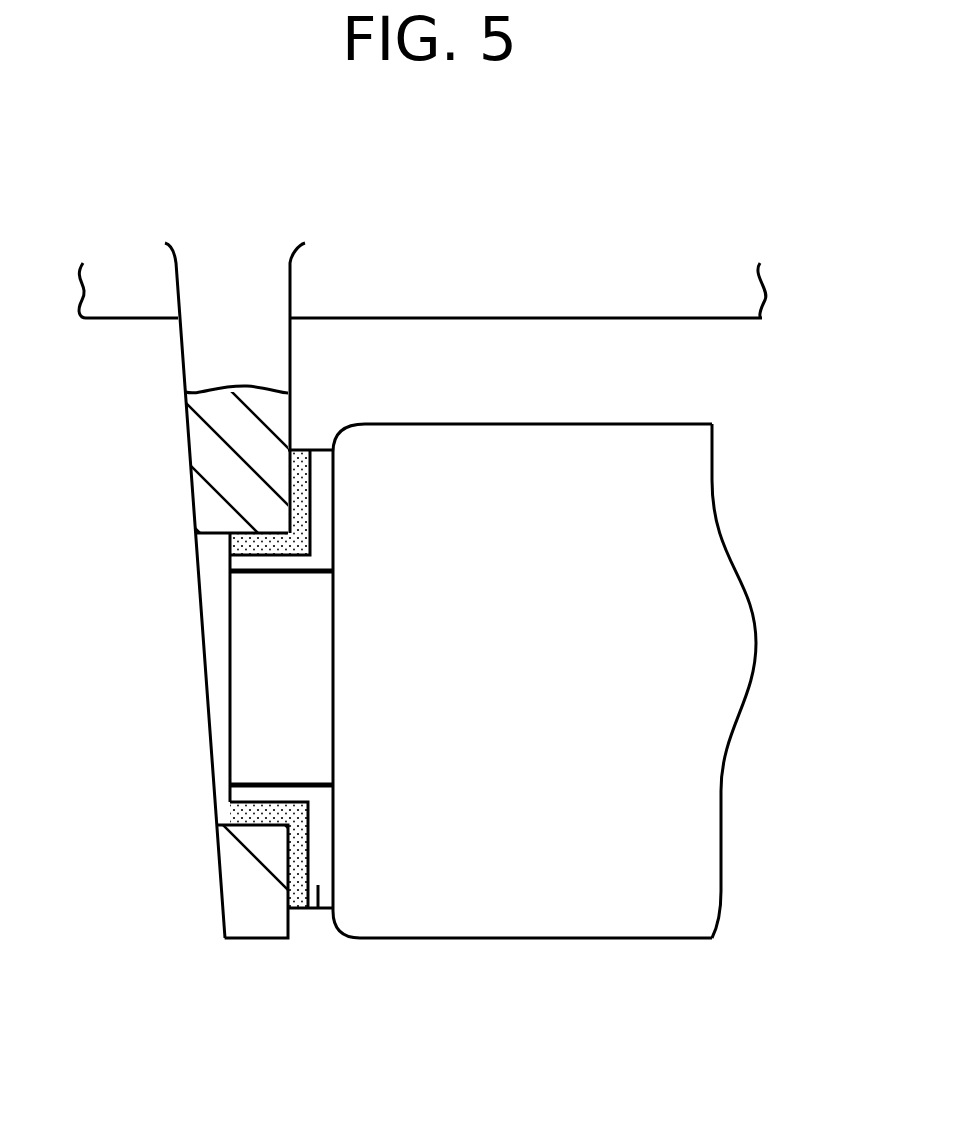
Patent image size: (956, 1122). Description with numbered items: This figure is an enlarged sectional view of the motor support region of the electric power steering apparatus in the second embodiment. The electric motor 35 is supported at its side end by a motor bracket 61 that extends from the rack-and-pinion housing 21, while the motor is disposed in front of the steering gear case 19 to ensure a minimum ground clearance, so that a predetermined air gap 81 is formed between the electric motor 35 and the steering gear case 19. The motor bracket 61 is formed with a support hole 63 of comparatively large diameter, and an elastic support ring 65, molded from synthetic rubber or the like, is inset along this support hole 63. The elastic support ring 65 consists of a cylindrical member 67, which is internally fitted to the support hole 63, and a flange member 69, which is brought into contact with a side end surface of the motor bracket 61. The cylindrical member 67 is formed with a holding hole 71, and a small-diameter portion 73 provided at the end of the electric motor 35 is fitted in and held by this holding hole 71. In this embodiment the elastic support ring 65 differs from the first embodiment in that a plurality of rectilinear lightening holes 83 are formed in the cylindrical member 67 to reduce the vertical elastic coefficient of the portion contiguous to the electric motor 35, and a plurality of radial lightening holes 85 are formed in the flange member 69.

The steering gear case 19 is at (422, 282).
The rack-and-pinion housing 21 is at (422, 290).
The air gap 81 is at (573, 377).
The motor bracket 61 is at (192, 418).
The support hole 63 is at (213, 540).
The elastic support ring 65 is at (214, 567).
The small-diameter portion 73 is at (248, 665).
The holding hole 71 is at (263, 783).
The rectilinear lightening holes 83 is at (247, 795).
The cylindrical member 67 is at (210, 817).
The flange member 69 is at (292, 910).
The radial lightening holes 85 is at (320, 910).
The electric motor 35 is at (533, 918).